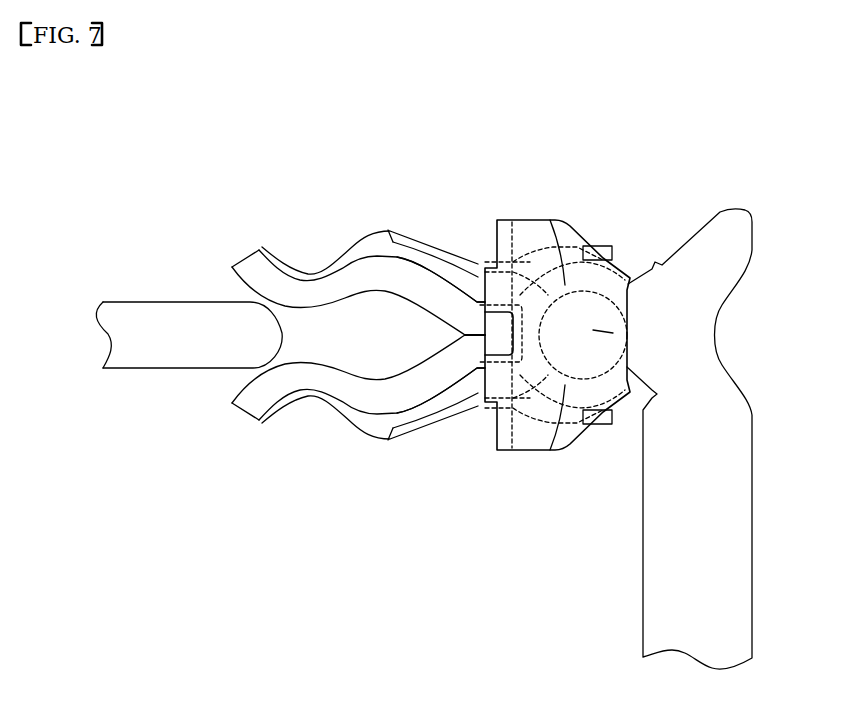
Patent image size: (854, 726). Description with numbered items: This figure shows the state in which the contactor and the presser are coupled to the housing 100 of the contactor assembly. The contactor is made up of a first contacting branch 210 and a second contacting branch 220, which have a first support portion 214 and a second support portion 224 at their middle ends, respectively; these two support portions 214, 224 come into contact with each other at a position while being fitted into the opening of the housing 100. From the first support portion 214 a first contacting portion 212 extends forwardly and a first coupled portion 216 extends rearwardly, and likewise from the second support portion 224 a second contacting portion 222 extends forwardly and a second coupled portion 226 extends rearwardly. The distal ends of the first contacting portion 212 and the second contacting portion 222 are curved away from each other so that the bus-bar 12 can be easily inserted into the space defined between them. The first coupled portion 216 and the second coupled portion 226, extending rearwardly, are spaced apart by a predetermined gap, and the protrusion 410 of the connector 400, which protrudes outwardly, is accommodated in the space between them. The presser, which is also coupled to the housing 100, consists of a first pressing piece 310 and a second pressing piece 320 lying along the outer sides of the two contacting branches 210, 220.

The bus-bar 12 is at (143, 313).
The housing 100 is at (570, 432).
The first contacting branch 210 is at (443, 224).
The first contacting portion 212 is at (397, 274).
The first support portion 214 is at (478, 311).
The first coupled portion 216 is at (569, 222).
The second contacting branch 220 is at (443, 447).
The second contacting portion 222 is at (397, 396).
The second support portion 224 is at (478, 359).
The second coupled portion 226 is at (565, 387).
The first pressing piece 310 is at (335, 257).
The second pressing piece 320 is at (336, 413).
The connector 400 is at (730, 463).
The protrusion 410 is at (613, 333).